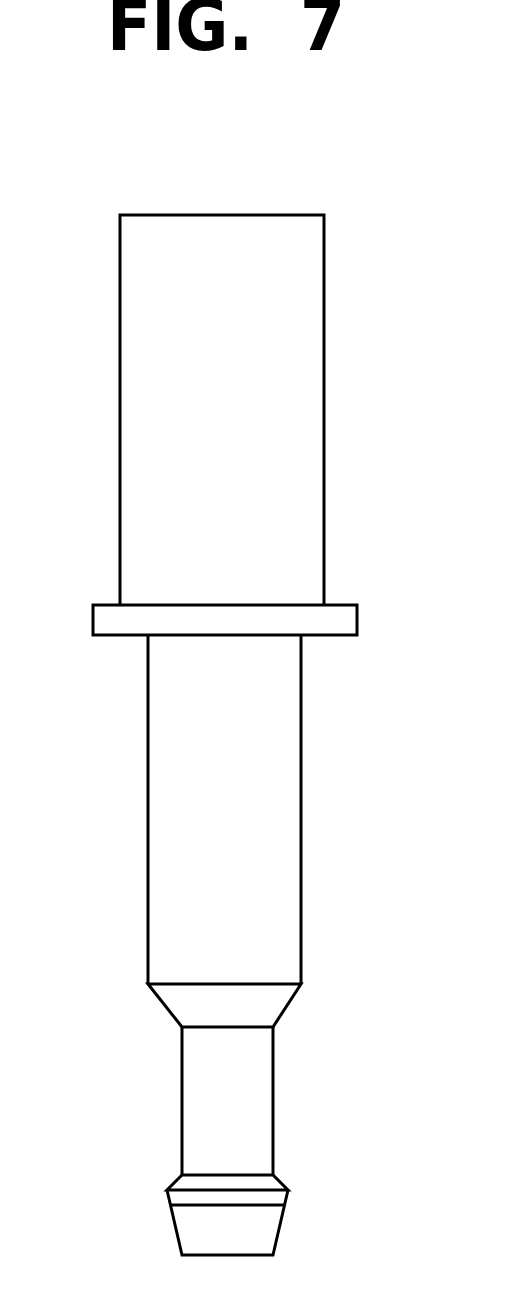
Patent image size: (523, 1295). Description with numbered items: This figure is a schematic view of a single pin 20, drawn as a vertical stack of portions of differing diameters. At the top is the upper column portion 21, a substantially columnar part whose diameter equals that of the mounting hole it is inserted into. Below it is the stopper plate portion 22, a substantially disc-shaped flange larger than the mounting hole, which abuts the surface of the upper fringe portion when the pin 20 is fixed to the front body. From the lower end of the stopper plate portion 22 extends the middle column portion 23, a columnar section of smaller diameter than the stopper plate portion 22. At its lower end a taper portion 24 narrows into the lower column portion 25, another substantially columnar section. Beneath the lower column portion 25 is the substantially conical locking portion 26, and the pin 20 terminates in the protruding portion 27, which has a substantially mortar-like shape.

The pin 20 is at (262, 754).
The upper column portion 21 is at (324, 418).
The stopper plate portion 22 is at (357, 610).
The middle column portion 23 is at (168, 806).
The taper portion 24 is at (188, 1008).
The lower column portion 25 is at (257, 1105).
The locking portion 26 is at (190, 1182).
The protruding portion 27 is at (260, 1230).